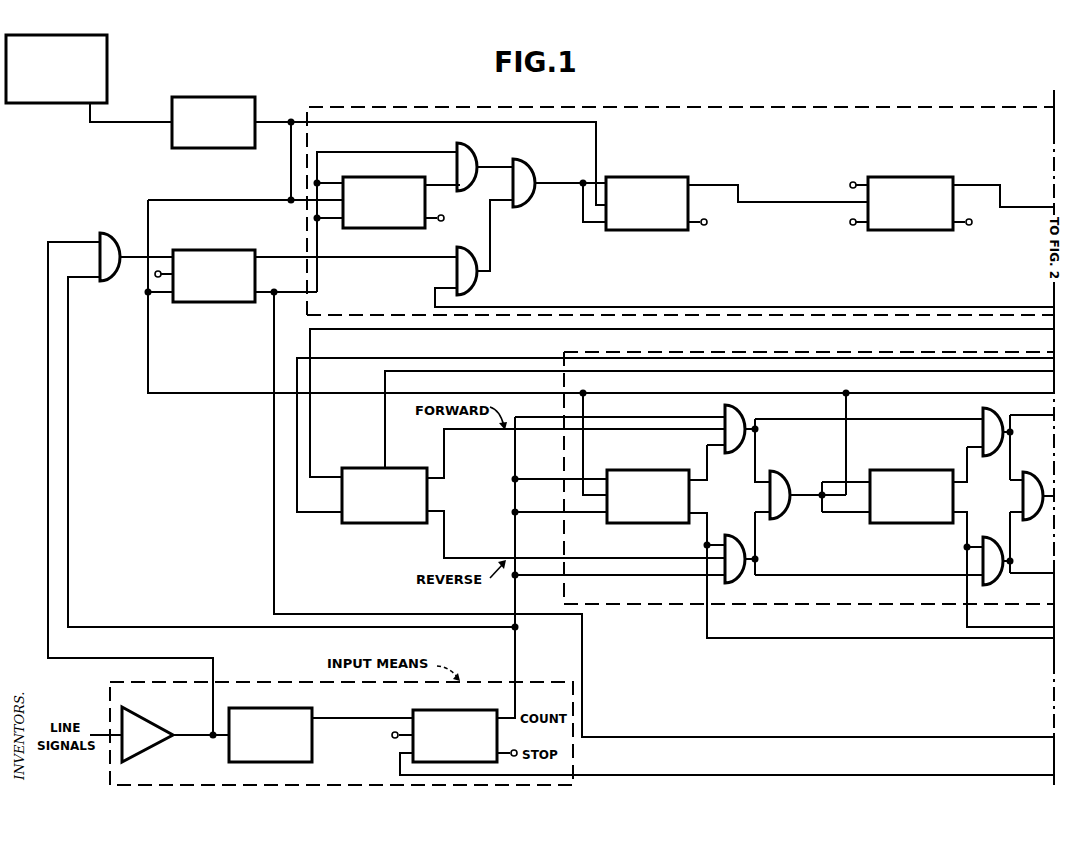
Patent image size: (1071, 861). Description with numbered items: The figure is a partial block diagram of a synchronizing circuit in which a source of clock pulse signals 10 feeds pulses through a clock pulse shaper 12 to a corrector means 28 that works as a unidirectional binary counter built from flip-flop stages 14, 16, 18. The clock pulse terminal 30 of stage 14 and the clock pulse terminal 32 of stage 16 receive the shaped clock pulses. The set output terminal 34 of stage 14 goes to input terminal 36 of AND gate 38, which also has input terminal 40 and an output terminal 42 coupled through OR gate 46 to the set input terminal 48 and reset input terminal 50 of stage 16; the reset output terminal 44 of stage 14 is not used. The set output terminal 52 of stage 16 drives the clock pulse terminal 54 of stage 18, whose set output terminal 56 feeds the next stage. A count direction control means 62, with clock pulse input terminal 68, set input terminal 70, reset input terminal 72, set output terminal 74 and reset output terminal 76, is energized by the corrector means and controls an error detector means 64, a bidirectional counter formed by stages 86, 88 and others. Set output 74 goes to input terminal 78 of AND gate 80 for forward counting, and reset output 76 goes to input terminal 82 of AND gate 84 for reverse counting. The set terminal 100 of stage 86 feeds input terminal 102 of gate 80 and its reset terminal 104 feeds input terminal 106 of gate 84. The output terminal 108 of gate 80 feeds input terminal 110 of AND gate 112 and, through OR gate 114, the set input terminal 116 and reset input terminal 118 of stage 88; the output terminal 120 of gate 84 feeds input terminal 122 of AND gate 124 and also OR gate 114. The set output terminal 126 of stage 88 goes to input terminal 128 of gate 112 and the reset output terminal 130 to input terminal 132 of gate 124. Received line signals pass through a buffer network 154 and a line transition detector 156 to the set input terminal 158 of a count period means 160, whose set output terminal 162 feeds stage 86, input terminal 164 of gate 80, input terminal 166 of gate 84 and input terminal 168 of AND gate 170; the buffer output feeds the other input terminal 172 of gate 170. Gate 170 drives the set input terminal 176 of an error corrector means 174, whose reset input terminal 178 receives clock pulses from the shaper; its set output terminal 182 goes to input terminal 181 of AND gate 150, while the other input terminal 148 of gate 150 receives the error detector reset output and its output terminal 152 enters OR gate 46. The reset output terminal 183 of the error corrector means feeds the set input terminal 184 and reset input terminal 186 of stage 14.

The source of clock pulse signals 10 is at (105, 63).
The clock pulse shaper 12 is at (218, 97).
The stage (flip-flop) 14 is at (384, 202).
The stage (flip-flop) 16 is at (656, 203).
The stage (flip-flop) 18 is at (911, 203).
The corrector means 28 is at (845, 105).
The clock pulse terminal 30 is at (245, 193).
The clock pulse terminal 32 is at (596, 139).
The set output terminal 34 is at (441, 170).
The input terminal 36 is at (450, 192).
The AND gate 38 is at (466, 143).
The input terminal 40 is at (455, 152).
The output terminal 42 is at (482, 168).
The reset output terminal 44 is at (445, 220).
The OR gate 46 is at (524, 178).
The set input terminal 48 is at (603, 180).
The reset input terminal 50 is at (596, 228).
The set output terminal 52 is at (712, 185).
The clock pulse terminal 54 is at (833, 202).
The set output terminal 56 is at (980, 185).
The count direction control means 62 is at (408, 526).
The error detector means 64 is at (685, 352).
The clock pulse input terminal 68 is at (385, 460).
The set input terminal 70 is at (323, 476).
The reset input terminal 72 is at (322, 514).
The set output terminal 74 is at (445, 480).
The reset output terminal 76 is at (445, 512).
The input terminal 78 is at (722, 432).
The AND gate 80 is at (739, 418).
The input terminal 82 is at (698, 558).
The AND gate 84 is at (748, 548).
The stage (flip-flop) 86 is at (635, 457).
The stage (flip-flop) 88 is at (911, 496).
The set terminal 100 is at (698, 470).
The input terminal 102 is at (713, 447).
The reset terminal 104 is at (700, 510).
The input terminal 106 is at (708, 543).
The output terminal 108 is at (758, 433).
The input terminal 110 is at (975, 416).
The AND gate 112 is at (994, 410).
The OR gate 114 is at (785, 510).
The set input terminal 116 is at (860, 478).
The reset input terminal 118 is at (862, 515).
The output terminal 120 is at (757, 562).
The input terminal 122 is at (975, 577).
The AND gate 124 is at (1000, 578).
The set output terminal 126 is at (966, 468).
The input terminal 128 is at (968, 445).
The reset output terminal 130 is at (964, 522).
The input terminal 132 is at (969, 544).
The input terminal 148 is at (454, 285).
The AND gate 150 is at (476, 285).
The output terminal 152 is at (480, 267).
The buffer network 154 is at (146, 724).
The line transition detector 156 is at (276, 708).
The set input terminal 158 is at (352, 717).
The count period means 160 is at (486, 764).
The set output terminal 162 is at (503, 712).
The input terminal 164 is at (725, 416).
The input terminal 166 is at (722, 580).
The input terminal 168 is at (92, 276).
The AND gate 170 is at (106, 232).
The input terminal 172 is at (100, 243).
The error corrector means 174 is at (243, 297).
The set input terminal 176 is at (162, 255).
The error corrector clock input line 178 is at (165, 304).
The input terminal 181 is at (425, 255).
The set output terminal 182 is at (265, 256).
The reset output terminal 183 is at (265, 291).
The set input terminal 184 is at (330, 182).
The reset input terminal 186 is at (335, 222).